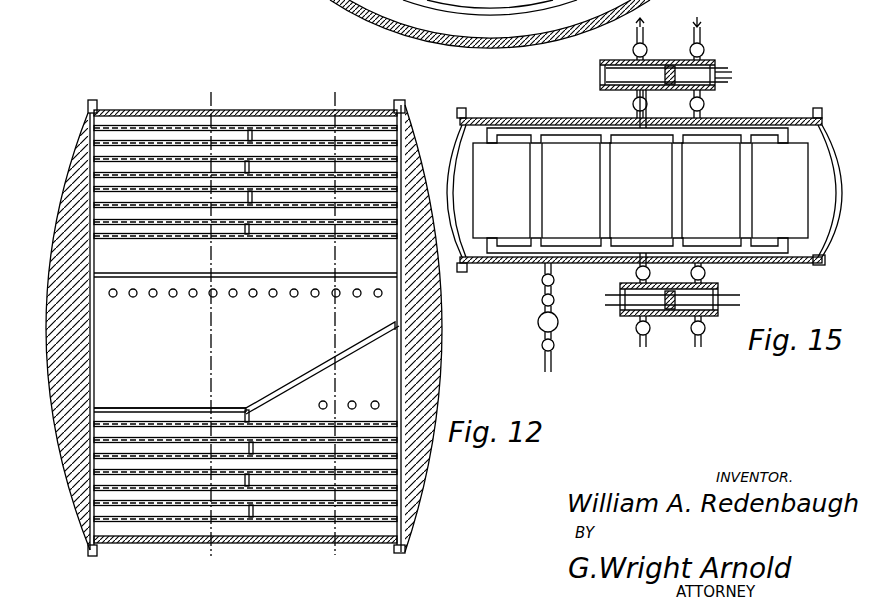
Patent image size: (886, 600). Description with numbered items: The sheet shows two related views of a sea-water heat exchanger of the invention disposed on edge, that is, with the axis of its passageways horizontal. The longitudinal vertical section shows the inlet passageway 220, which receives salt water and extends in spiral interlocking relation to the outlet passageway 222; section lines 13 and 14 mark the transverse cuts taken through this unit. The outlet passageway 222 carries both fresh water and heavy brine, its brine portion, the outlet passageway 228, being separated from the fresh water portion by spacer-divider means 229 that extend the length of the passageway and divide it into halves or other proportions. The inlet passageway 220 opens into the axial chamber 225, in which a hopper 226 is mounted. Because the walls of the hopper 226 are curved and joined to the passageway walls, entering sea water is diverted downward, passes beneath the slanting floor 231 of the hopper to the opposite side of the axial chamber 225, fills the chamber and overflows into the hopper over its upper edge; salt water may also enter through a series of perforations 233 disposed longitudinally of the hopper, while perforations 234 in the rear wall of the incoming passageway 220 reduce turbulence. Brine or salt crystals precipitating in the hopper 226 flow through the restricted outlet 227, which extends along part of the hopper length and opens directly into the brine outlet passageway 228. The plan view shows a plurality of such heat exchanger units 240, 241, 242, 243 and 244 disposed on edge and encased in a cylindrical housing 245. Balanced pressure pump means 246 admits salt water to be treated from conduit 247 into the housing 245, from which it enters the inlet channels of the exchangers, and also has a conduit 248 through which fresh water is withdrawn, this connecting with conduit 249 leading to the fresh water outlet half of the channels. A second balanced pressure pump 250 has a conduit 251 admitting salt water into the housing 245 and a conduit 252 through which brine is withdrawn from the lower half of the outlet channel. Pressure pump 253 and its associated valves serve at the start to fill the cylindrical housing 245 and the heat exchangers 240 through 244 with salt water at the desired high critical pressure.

In FIG. 12, the section line 13- 13 is at (211, 92).
In FIG. 12, the section line 14- 14 is at (326, 96).
In FIG. 12, the inlet passageway 220 is at (384, 358).
In FIG. 12, the outlet passageway 222 is at (188, 450).
In FIG. 12, the axial chamber 225 is at (347, 259).
In FIG. 12, the hopper 226 is at (242, 278).
In FIG. 12, the restricted outlet 227 is at (128, 405).
In FIG. 12, the outlet passageway for heavy brine 228 is at (212, 414).
In FIG. 12, the spacer-divider means 229 is at (238, 186).
In FIG. 12, the slanting floor 231 is at (334, 358).
In FIG. 12, the perforations 233 is at (231, 297).
In FIG. 12, the perforations 234 is at (375, 401).
In FIG. 15, the heat exchanger unit 240 is at (518, 196).
In FIG. 15, the heat exchanger unit 241 is at (588, 196).
In FIG. 15, the heat exchanger unit 242 is at (658, 196).
In FIG. 15, the heat exchanger unit 243 is at (728, 196).
In FIG. 15, the heat exchanger unit 244 is at (796, 196).
In FIG. 15, the cylindrical housing 245 is at (553, 122).
In FIG. 15, the balanced pressure pump means 246 is at (729, 71).
In FIG. 15, the conduit 247 is at (703, 40).
In FIG. 15, the conduit 248 is at (623, 130).
In FIG. 15, the conduit 249 is at (651, 44).
In FIG. 15, the balanced pressure pump 250 is at (734, 284).
In FIG. 15, the conduit 251 is at (704, 346).
In FIG. 15, the conduit 252 is at (638, 266).
In FIG. 15, the pressure pump 253 is at (559, 323).